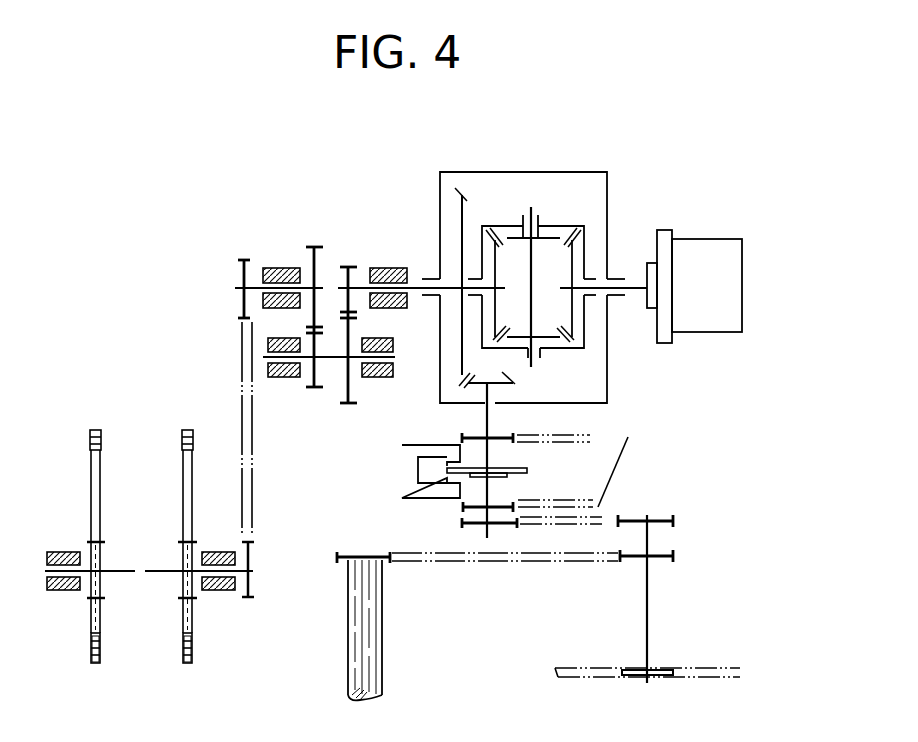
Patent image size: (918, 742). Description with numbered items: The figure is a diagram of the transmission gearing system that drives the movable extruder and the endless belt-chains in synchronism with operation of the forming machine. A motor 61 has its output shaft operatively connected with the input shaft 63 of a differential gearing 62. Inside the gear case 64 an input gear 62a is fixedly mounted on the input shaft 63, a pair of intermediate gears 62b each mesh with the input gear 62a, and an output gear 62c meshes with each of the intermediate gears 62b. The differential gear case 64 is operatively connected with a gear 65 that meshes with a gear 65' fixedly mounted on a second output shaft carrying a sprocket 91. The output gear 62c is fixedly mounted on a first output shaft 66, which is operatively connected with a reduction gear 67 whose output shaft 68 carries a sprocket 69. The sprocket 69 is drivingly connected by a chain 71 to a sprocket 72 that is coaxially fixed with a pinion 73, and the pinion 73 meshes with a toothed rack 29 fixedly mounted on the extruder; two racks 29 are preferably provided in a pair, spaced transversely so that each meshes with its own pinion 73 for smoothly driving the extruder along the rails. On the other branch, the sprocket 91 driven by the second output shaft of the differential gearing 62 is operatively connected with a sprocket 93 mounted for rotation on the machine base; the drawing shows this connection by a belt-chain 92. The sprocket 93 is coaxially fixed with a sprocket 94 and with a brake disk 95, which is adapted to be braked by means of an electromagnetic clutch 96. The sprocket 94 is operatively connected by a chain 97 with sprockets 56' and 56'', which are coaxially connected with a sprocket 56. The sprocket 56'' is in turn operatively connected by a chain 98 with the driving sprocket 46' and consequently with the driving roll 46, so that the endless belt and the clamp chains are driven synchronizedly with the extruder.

The toothed rack 29 is at (95, 430).
The driving roll 46 is at (398, 630).
The driving sprocket 46' is at (357, 530).
The sprocket 56 is at (647, 648).
The sprocket 56' is at (656, 497).
The sprocket 56'' is at (677, 594).
The motor 61 is at (700, 315).
The differential gearing 62 is at (565, 215).
The input gear 62a is at (586, 268).
The intermediate gears 62b is at (510, 238).
The output gear 62c is at (493, 260).
The input shaft 63 is at (633, 292).
The gear case 64 is at (585, 332).
The gear 65 is at (457, 288).
The gear 65' is at (471, 460).
The first output shaft 66 is at (418, 292).
The reduction gear 67 is at (328, 242).
The output shaft 68 is at (256, 283).
The sprocket 69 is at (244, 275).
The chain 71 is at (254, 434).
The sprocket 72 is at (250, 578).
The pinion 73 is at (100, 663).
The sprocket 91 is at (498, 435).
The belt 92 is at (627, 447).
The sprocket 93 is at (502, 503).
The sprocket 94 is at (483, 523).
The brake disk 95 is at (517, 468).
The electromagnetic clutch 96 is at (402, 463).
The chain 97 is at (598, 527).
The chain 98 is at (510, 563).